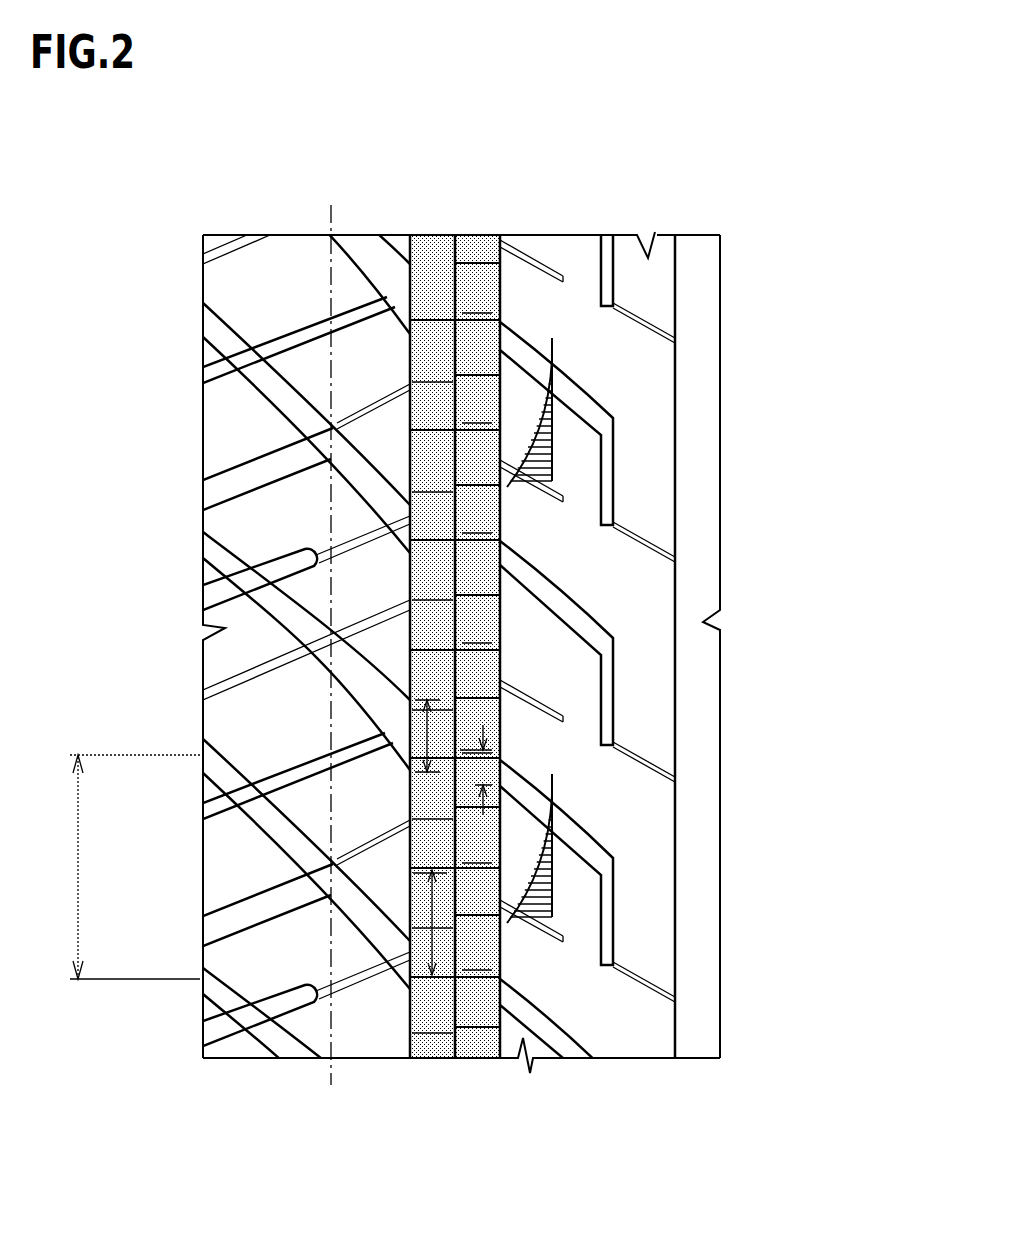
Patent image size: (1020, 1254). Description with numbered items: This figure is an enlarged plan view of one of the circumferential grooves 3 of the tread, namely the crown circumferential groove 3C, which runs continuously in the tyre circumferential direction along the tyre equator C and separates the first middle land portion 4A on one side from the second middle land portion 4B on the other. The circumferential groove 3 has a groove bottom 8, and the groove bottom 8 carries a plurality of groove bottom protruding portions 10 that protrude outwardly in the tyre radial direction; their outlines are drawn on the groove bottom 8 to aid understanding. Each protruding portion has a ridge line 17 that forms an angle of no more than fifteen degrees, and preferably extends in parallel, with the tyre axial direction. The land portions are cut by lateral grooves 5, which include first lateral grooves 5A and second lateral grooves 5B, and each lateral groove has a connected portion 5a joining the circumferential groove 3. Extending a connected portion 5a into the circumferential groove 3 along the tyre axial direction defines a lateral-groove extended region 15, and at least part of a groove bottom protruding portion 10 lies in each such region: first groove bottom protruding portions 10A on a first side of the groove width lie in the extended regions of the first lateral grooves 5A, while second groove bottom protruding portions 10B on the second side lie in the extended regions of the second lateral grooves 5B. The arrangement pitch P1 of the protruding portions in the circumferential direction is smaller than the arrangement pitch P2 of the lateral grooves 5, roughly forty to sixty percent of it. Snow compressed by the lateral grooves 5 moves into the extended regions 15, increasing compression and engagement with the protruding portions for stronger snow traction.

The circumferential groove 3 is at (463, 641).
The crown circumferential groove 3C is at (430, 292).
The groove bottom 8 is at (480, 292).
The first middle land portion 4A is at (306, 842).
The second middle land portion 4B is at (598, 1014).
The lateral groove 5 is at (293, 395).
The first lateral groove 5A is at (297, 962).
The second lateral groove 5B is at (569, 603).
The connected portion 5a is at (404, 510).
The groove bottom protruding portion 10 is at (427, 316).
The first groove bottom protruding portion 10A is at (427, 648).
The second groove bottom protruding portion 10B is at (479, 545).
The lateral-groove extended region 15 is at (420, 733).
The ridge line 17 is at (396, 518).
The tyre equator C is at (330, 630).
The arrangement pitch of groove bottom protruding portions P1 is at (426, 928).
The arrangement pitch of lateral grooves P2 is at (115, 867).